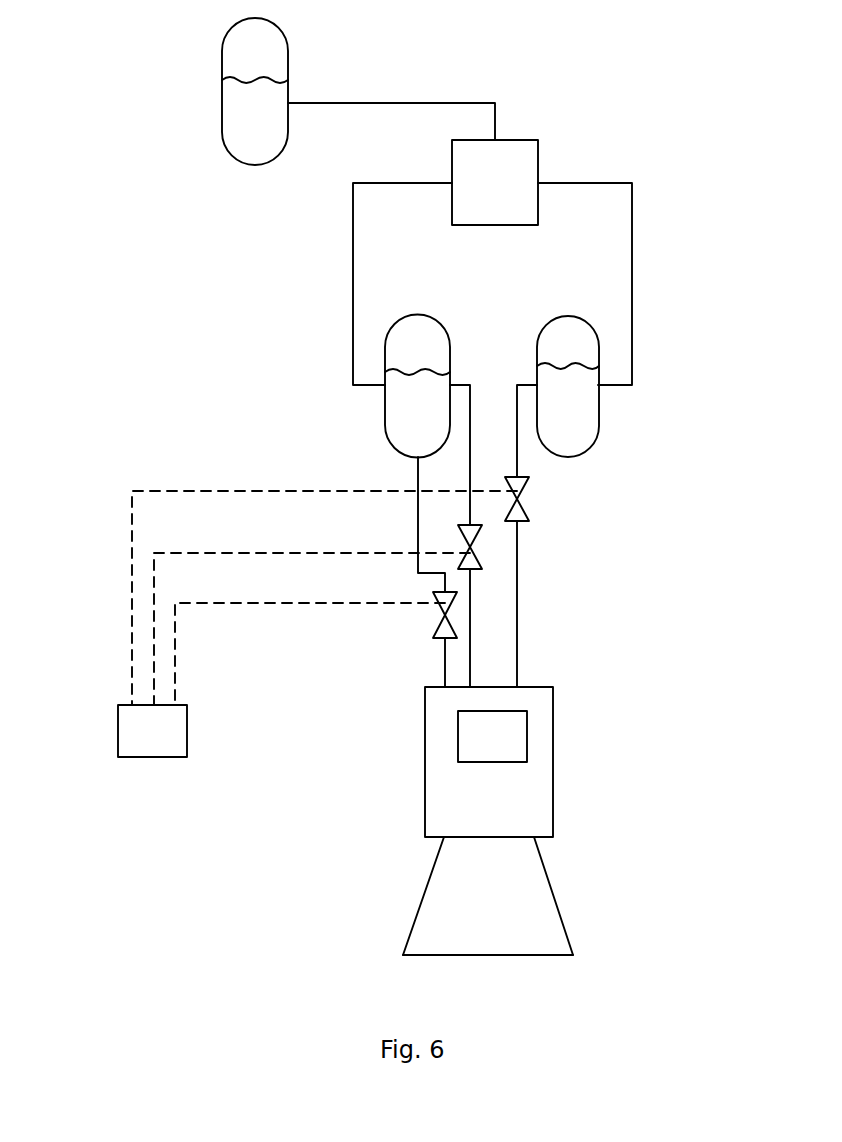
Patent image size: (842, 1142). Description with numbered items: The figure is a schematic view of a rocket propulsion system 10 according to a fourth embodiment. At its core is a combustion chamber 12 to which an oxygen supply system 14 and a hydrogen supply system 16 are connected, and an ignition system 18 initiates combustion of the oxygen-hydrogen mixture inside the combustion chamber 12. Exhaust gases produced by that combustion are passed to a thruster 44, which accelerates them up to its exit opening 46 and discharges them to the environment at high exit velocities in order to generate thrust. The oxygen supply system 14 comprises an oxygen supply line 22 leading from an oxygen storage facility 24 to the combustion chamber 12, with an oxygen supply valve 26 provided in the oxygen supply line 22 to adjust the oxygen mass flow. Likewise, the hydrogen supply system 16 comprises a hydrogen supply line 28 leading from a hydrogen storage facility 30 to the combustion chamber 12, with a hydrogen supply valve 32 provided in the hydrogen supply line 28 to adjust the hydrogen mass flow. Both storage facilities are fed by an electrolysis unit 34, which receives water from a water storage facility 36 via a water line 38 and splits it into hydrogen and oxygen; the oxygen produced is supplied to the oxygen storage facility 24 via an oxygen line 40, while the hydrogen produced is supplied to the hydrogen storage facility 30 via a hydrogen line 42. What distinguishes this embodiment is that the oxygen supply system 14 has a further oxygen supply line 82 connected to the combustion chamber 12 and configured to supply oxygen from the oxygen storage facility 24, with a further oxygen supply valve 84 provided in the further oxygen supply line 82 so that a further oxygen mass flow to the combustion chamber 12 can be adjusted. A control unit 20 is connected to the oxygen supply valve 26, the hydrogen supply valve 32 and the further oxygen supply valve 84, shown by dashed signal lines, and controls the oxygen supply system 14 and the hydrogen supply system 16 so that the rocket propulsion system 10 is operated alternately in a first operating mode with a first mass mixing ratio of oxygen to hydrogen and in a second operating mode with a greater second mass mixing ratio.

The rocket propulsion system 10 is at (108, 65).
The combustion chamber 12 is at (555, 815).
The oxygen supply system 14 is at (312, 410).
The hydrogen supply system 16 is at (682, 377).
The ignition system 18 is at (508, 727).
The control unit 20 is at (125, 745).
The oxygen supply line 22 is at (472, 590).
The oxygen storage facility 24 is at (400, 430).
The oxygen supply valve 26 is at (483, 561).
The hydrogen supply line 28 is at (520, 537).
The hydrogen storage facility 30 is at (583, 430).
The hydrogen supply valve 32 is at (525, 504).
The electrolysis unit 34 is at (525, 162).
The water storage facility 36 is at (242, 140).
The water line 38 is at (343, 100).
The oxygen line 40 is at (350, 276).
The hydrogen line 42 is at (633, 222).
The thruster 44 is at (538, 918).
The exit opening 46 is at (516, 958).
The further oxygen supply line 82 is at (445, 668).
The further oxygen supply valve 84 is at (440, 632).